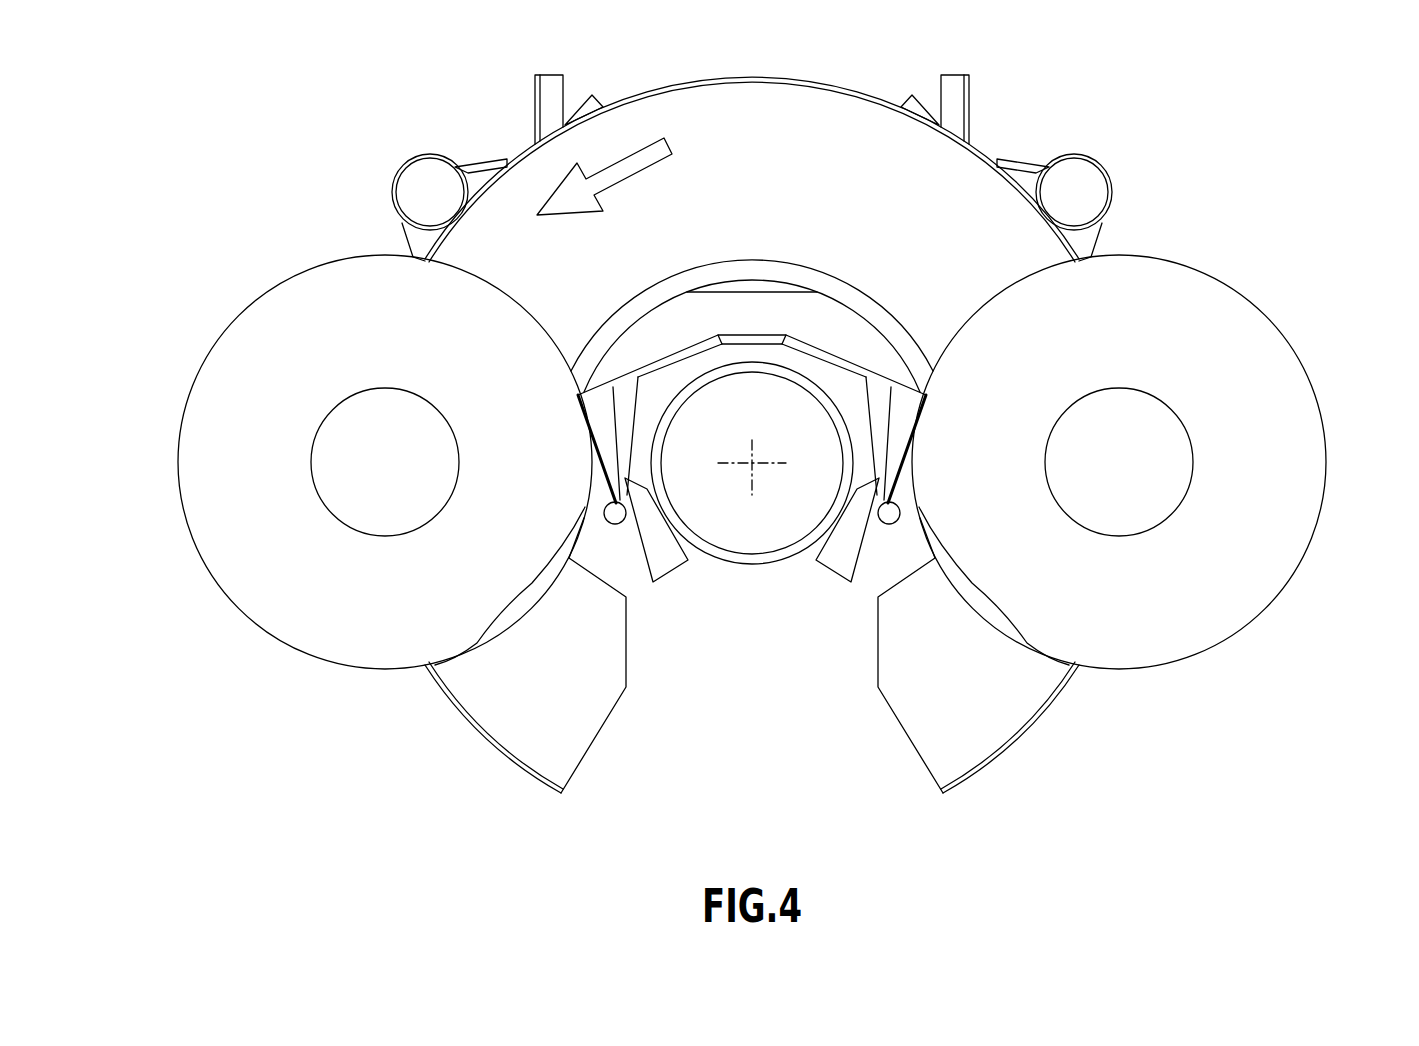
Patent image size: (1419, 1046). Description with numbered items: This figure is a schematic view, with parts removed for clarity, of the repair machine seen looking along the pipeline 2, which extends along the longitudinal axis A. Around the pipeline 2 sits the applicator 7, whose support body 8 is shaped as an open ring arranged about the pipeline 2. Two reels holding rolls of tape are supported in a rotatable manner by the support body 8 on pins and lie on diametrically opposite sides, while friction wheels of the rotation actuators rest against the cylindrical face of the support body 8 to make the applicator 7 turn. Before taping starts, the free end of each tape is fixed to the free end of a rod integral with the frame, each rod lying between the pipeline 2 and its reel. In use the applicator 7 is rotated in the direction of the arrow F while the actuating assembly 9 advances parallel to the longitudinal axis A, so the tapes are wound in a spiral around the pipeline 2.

The pipeline 2 is at (779, 586).
The applicator 7 is at (272, 768).
The support body 8 is at (751, 125).
The actuating assembly 9 is at (1040, 44).
The longitudinal axis A is at (752, 463).
The arrow F is at (603, 165).